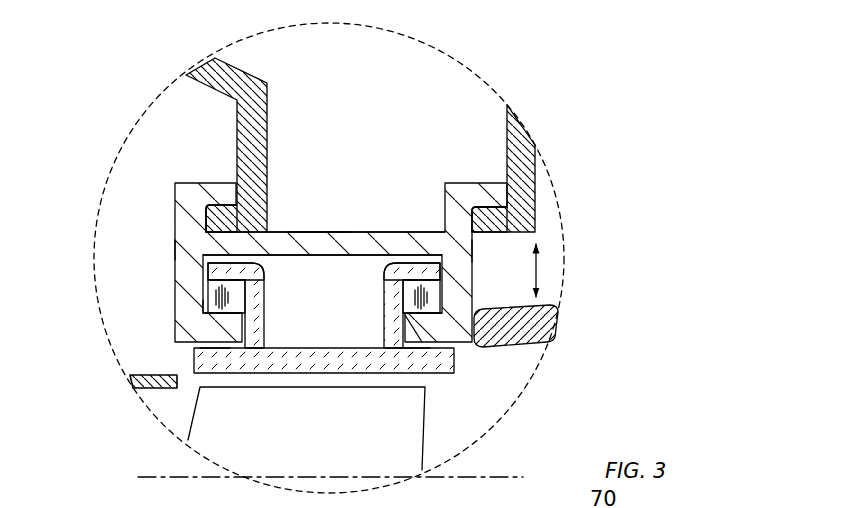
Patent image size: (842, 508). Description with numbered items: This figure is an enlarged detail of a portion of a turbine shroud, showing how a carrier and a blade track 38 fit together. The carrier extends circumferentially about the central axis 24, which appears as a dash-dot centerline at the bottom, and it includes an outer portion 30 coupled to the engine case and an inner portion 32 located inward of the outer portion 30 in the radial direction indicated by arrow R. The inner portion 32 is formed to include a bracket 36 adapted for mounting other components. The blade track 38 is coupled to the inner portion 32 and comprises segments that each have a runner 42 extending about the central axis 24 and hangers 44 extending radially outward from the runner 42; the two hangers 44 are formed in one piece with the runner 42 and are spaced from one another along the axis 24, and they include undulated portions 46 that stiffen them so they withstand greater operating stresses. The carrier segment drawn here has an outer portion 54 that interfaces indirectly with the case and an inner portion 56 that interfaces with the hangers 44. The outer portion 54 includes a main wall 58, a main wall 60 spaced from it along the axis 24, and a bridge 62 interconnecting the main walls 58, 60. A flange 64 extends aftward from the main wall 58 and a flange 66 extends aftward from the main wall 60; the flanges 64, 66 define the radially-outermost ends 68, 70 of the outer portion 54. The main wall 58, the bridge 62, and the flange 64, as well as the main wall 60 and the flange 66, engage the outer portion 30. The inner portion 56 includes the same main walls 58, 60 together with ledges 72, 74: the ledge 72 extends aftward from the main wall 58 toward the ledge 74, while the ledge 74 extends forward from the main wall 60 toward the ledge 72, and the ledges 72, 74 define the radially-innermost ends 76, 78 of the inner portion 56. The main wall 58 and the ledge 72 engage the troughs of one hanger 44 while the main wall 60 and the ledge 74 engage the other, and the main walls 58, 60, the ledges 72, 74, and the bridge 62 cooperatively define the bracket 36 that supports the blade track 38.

The central axis 24 is at (480, 477).
The outer portion of carrier 30 is at (170, 197).
The inner portion of carrier 32 is at (352, 230).
The bracket 36 is at (363, 281).
The blade track 38 is at (191, 371).
The runner 42 is at (440, 360).
The hangers 44 is at (261, 305).
The undulated portions 46 is at (257, 266).
The outer portion of carrier segment 54 is at (320, 230).
The inner portion of carrier segment 56 is at (318, 259).
The main wall 58 is at (188, 250).
The main wall 60 is at (454, 252).
The bridge 62 is at (367, 230).
The flange 64 is at (218, 181).
The flange 66 is at (470, 190).
The radially-outermost end 68 is at (184, 180).
The radially-outermost end 70 is at (455, 181).
The ledge 72 is at (216, 328).
The ledge 74 is at (435, 330).
The radially-innermost end 76 is at (213, 351).
The radially-innermost end 78 is at (415, 351).
The radial direction R is at (538, 273).